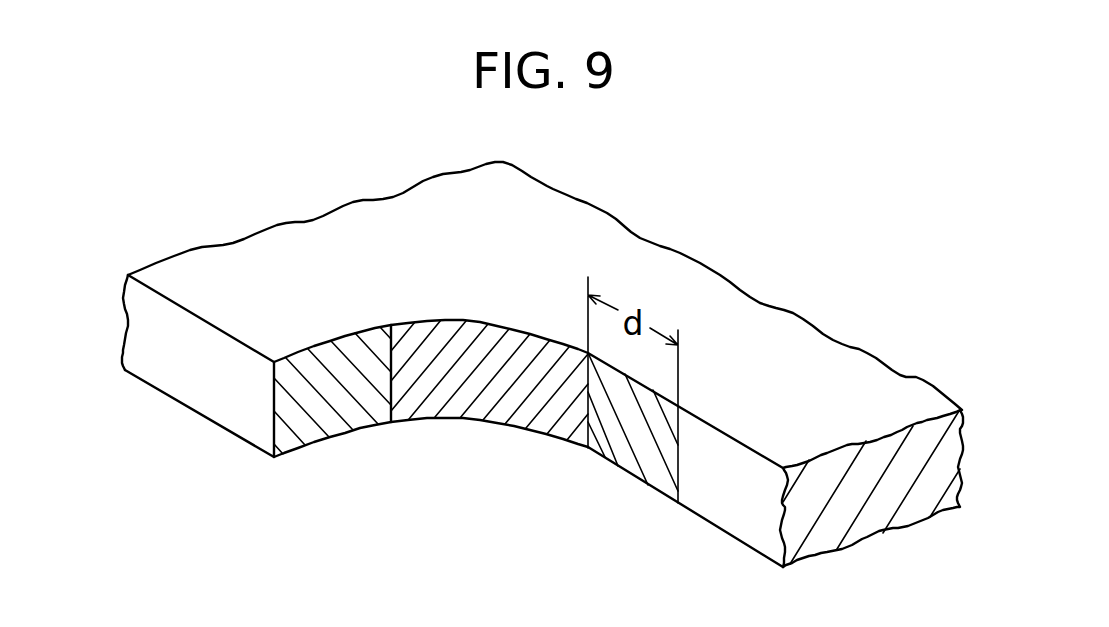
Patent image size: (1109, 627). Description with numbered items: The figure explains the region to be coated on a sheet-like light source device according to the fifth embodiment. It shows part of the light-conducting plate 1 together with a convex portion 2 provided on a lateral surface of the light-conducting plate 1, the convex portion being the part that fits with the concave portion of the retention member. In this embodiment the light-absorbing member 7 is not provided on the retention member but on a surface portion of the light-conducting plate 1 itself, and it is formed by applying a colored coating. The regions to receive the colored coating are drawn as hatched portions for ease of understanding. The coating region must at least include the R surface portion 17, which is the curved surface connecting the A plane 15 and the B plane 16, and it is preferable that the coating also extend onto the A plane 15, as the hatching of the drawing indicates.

The light-conducting plate 1 is at (548, 223).
The convex portion 2 is at (272, 317).
The light-absorbing member 7 is at (515, 450).
The A plane 15 is at (323, 405).
The B plane 16 is at (635, 455).
The R surface portion 17 is at (440, 393).